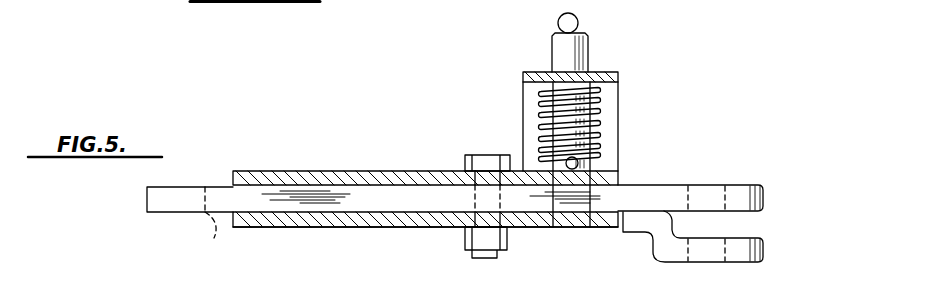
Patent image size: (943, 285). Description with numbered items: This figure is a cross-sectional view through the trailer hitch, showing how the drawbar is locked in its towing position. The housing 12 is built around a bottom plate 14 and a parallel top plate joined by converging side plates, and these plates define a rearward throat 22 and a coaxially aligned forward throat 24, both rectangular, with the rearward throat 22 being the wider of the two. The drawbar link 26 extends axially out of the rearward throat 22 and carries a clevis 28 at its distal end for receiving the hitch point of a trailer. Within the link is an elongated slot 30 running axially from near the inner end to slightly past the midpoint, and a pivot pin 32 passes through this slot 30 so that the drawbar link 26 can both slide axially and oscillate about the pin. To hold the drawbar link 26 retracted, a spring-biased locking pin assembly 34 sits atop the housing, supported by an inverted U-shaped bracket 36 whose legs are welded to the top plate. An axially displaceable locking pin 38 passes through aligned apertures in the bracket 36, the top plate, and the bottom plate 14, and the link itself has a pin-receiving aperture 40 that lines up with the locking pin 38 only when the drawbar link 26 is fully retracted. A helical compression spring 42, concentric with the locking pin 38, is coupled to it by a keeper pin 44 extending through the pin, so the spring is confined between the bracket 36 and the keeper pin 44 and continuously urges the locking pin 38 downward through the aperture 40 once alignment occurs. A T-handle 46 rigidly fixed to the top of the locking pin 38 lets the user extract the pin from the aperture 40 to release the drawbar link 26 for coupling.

The housing 12 is at (252, 166).
The bottom plate 14 is at (370, 222).
The throat 22 is at (613, 200).
The throat 24 is at (246, 188).
The drawbar link 26 is at (406, 195).
The clevis 28 is at (765, 236).
The elongated slot 30 is at (216, 233).
The pivot pin 32 is at (483, 162).
The spring-biased locking pin assembly 34 is at (618, 72).
The bracket 36 is at (620, 98).
The locking pin 38 is at (558, 47).
The pin-receiving aperture 40 is at (575, 233).
The compression spring 42 is at (546, 118).
The keeper pin 44 is at (597, 162).
The T-handle 46 is at (577, 21).